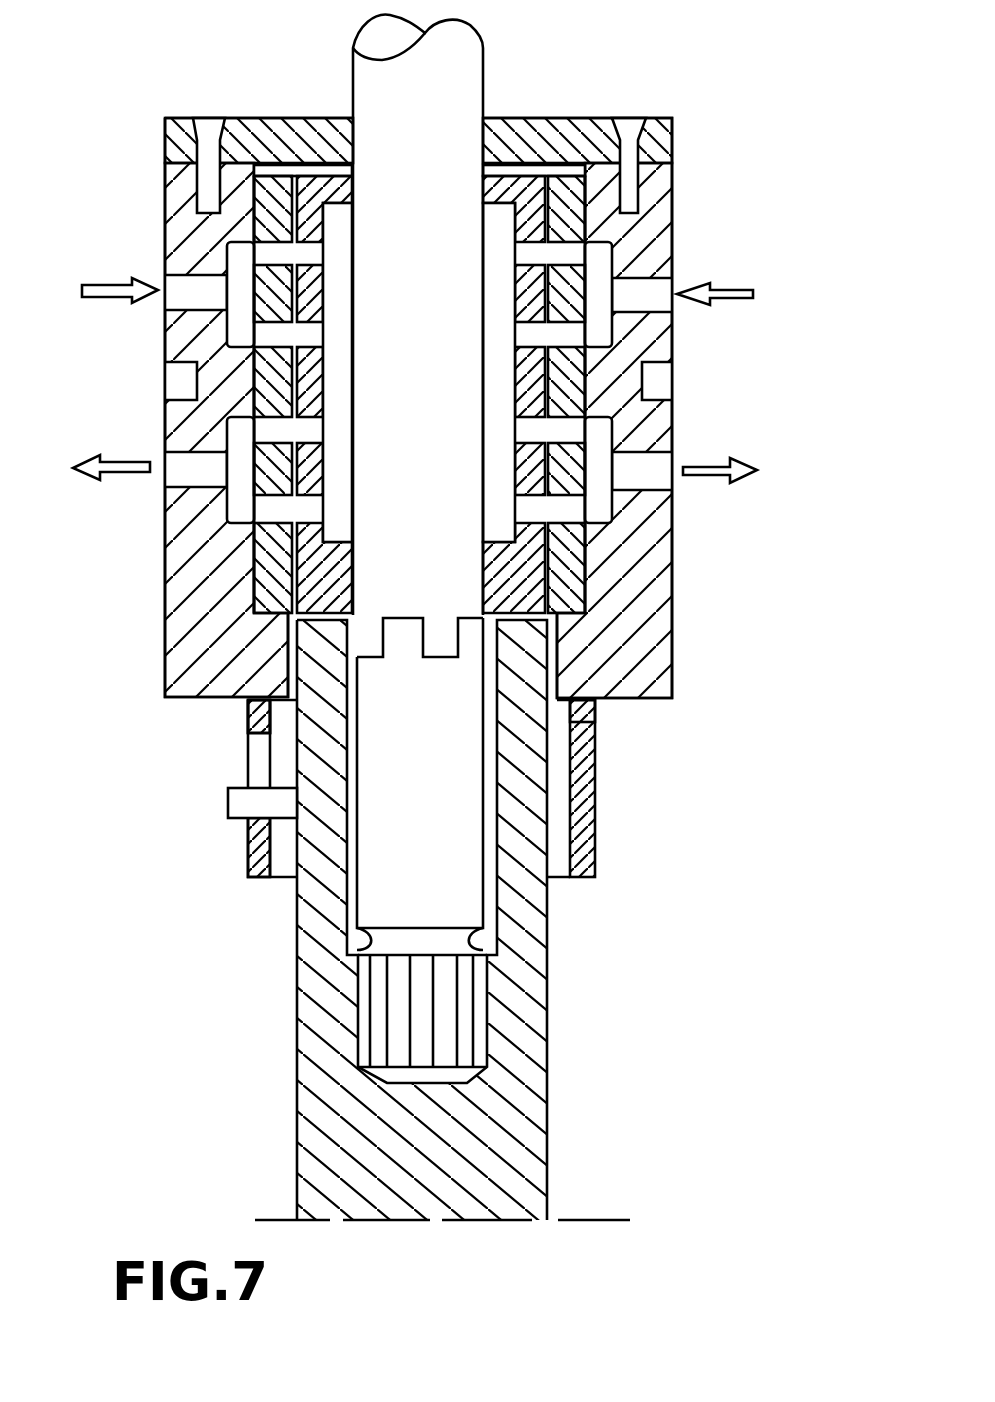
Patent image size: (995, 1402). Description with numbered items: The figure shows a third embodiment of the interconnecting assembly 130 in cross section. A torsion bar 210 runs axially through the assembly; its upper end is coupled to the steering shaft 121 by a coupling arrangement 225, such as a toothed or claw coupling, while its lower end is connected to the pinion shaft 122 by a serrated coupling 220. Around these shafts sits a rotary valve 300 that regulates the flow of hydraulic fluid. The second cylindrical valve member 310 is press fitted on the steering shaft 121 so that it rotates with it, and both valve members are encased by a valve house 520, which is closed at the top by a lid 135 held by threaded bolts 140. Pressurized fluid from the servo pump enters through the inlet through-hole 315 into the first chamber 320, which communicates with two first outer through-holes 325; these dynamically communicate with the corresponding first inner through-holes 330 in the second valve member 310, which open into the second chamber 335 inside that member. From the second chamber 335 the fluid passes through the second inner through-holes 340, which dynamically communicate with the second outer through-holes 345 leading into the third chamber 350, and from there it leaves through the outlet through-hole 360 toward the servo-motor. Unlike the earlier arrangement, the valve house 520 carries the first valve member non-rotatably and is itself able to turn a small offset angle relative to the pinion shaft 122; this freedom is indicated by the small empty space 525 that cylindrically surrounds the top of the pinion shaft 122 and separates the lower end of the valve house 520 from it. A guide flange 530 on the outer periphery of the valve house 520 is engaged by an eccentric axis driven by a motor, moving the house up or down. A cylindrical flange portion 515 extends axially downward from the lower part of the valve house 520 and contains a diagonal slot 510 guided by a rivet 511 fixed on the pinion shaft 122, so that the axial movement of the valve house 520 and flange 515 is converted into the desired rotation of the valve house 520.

The interconnecting assembly 130 is at (766, 114).
The lid 135 is at (287, 140).
The threaded bolts 140 is at (207, 126).
The steering shaft 121 is at (447, 82).
The pinion shaft 122 is at (490, 1165).
The second cylindrical valve member 310 is at (495, 183).
The second chamber 335 is at (502, 236).
The first inner through-holes 330 is at (523, 322).
The first outer through-holes 325 is at (598, 265).
The inlet through-hole 315 is at (655, 302).
The first chamber 320 is at (570, 322).
The rotary valve 300 is at (515, 383).
The second outer through-holes 345 is at (600, 440).
The second inner through-holes 340 is at (522, 520).
The outlet through-hole 360 is at (660, 480).
The third chamber 350 is at (568, 508).
The guide flange 530 is at (178, 380).
The valve house 520 is at (205, 615).
The small empty space 525 is at (252, 712).
The diagonal slot 510 is at (250, 771).
The rivet 511 is at (242, 808).
The cylindrical flange portion 515 is at (588, 797).
The coupling arrangement 225 is at (412, 642).
The torsion bar 210 is at (458, 896).
The serrated coupling 220 is at (445, 1010).